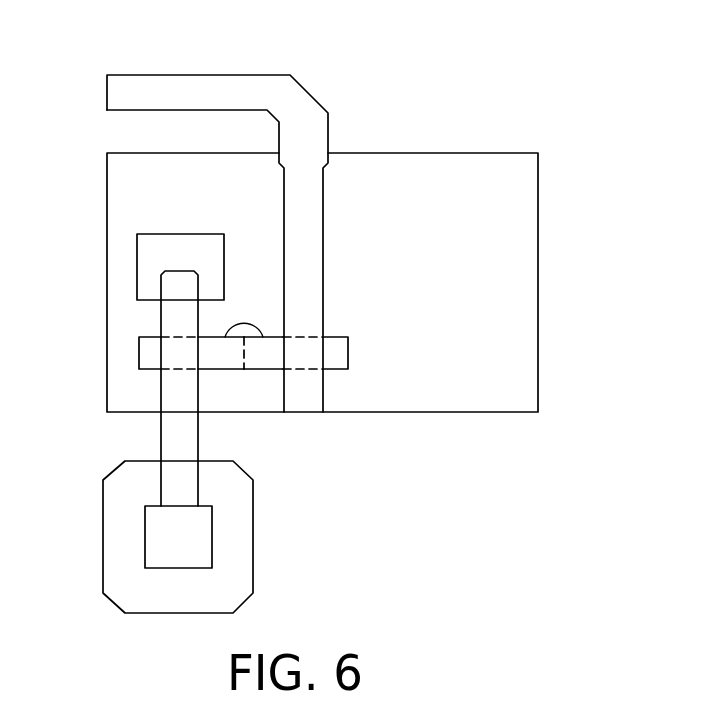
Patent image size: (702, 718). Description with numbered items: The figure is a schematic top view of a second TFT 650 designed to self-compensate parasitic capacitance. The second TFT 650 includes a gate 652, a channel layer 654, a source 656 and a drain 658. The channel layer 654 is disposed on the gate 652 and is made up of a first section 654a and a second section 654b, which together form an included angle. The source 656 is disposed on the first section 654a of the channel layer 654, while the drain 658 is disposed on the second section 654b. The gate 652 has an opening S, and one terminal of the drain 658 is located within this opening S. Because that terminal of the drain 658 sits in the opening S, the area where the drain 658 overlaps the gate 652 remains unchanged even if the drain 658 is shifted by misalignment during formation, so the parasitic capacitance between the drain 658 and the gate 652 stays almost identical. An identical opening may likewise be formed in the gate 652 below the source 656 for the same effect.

The second TFT 650 is at (322, 312).
The gate 652 is at (527, 188).
The channel layer 654 is at (266, 455).
The first section 654a is at (267, 363).
The second section 654b is at (212, 362).
The source 656 is at (308, 227).
The drain 658 is at (170, 428).
The opening S is at (197, 249).